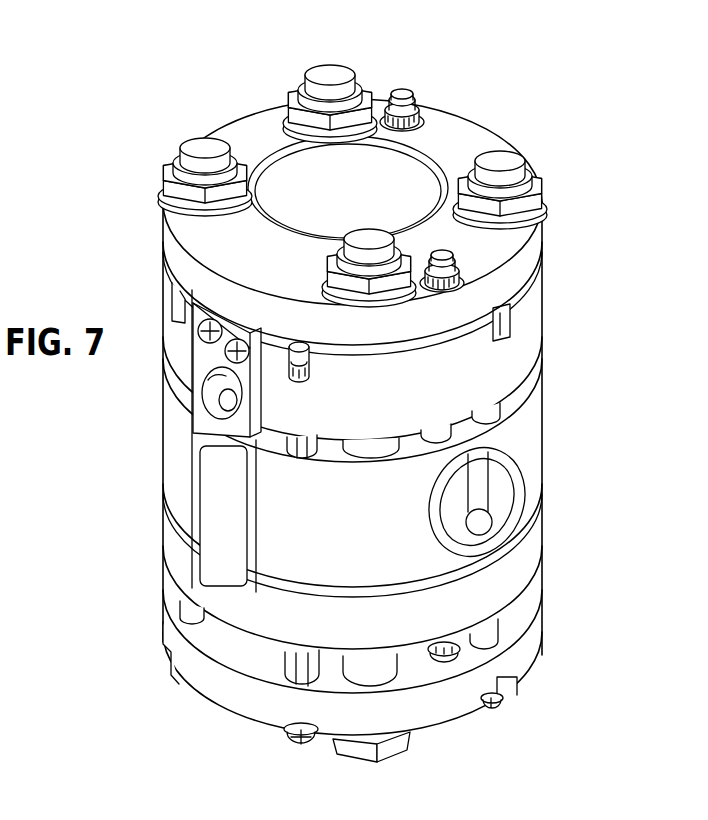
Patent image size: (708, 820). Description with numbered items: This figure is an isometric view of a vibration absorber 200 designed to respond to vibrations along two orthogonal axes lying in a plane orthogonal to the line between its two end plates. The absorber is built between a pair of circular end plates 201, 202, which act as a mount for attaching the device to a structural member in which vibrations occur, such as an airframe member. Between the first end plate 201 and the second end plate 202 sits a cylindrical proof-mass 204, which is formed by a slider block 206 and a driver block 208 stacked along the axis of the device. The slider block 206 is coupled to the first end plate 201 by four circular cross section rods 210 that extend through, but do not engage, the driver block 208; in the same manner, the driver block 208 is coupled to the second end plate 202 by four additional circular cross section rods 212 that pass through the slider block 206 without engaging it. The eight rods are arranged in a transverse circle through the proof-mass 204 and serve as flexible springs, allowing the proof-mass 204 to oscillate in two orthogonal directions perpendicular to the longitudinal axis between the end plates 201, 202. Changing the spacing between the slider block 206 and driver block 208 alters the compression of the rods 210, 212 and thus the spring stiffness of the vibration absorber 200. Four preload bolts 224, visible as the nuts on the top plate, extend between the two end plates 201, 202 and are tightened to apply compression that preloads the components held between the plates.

The vibration absorber 200 is at (373, 397).
The first end plate 201 is at (393, 222).
The second end plate 202 is at (440, 708).
The proof-mass 204 is at (528, 462).
The slider block 206 is at (533, 547).
The driver block 208 is at (528, 317).
The circular cross section rods 210 is at (428, 237).
The additional circular cross section rods 212 is at (301, 737).
The preload bolts 224 is at (333, 78).